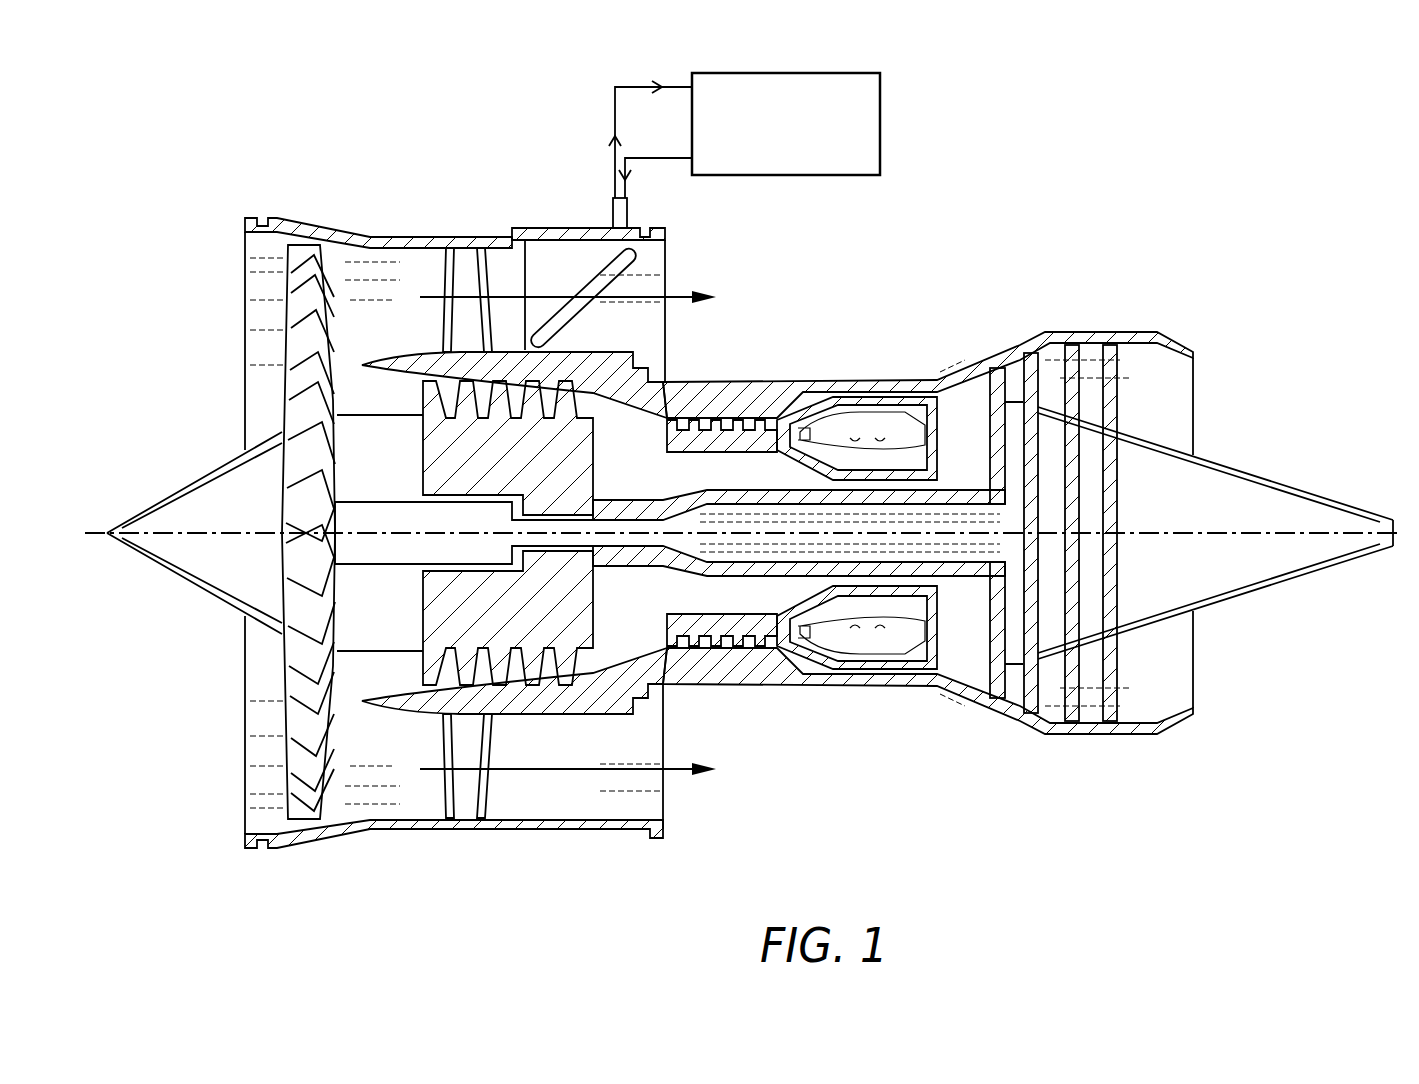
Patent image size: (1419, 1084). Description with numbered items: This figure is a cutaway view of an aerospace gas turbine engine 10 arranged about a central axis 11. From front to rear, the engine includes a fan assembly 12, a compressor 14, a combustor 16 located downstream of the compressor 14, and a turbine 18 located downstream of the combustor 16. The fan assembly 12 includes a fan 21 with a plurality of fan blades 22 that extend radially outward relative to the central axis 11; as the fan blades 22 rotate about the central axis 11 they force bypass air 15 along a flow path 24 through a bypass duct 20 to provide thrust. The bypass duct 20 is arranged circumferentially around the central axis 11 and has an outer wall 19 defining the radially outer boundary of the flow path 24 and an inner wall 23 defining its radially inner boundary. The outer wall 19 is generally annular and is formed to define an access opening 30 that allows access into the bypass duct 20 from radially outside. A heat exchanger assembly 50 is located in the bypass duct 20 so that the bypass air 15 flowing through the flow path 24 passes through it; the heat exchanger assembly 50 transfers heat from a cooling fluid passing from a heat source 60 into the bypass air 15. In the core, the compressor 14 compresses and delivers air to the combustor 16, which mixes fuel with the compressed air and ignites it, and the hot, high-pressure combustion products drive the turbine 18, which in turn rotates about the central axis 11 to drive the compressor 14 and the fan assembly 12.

The gas turbine engine 10 is at (1252, 200).
The central axis 11 is at (1376, 531).
The fan assembly 12 is at (305, 368).
The compressor 14 is at (372, 258).
The bypass air 15 is at (690, 297).
The combustor 16 is at (870, 418).
The turbine 18 is at (997, 385).
The outer wall 19 is at (498, 240).
The bypass duct 20 is at (413, 290).
The fan 21 is at (357, 540).
The fan blades 22 is at (735, 438).
The inner wall 23 is at (430, 400).
The flow path 24 is at (358, 300).
The access opening 30 is at (584, 268).
The heat exchanger assembly 50 is at (648, 234).
The heat source 60 is at (745, 72).